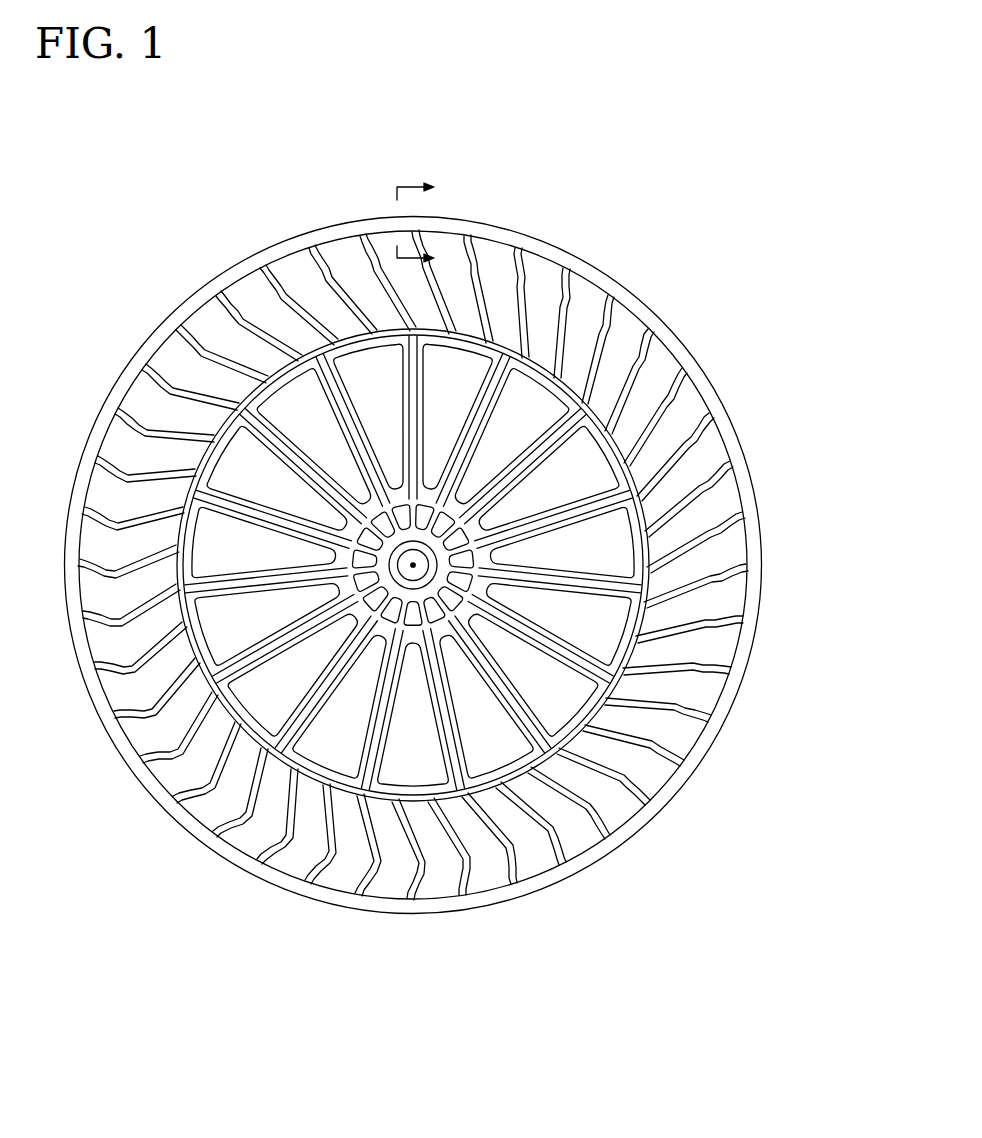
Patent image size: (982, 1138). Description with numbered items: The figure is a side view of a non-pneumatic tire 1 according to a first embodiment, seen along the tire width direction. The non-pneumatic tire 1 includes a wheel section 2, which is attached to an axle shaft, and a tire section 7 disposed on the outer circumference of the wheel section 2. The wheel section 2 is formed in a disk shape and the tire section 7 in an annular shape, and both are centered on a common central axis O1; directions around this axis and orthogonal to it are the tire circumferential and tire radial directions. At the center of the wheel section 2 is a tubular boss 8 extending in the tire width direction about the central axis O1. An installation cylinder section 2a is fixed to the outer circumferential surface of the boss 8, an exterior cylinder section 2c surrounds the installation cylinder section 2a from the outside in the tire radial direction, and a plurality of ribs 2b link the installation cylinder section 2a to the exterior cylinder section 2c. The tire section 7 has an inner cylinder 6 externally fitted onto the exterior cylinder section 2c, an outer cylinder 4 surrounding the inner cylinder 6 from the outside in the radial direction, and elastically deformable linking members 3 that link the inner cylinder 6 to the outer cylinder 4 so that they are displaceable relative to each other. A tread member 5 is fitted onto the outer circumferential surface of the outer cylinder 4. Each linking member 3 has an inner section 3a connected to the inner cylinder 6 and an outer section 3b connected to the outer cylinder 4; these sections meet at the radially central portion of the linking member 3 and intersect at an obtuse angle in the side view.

The non-pneumatic tire 1 is at (190, 192).
The wheel section 2 is at (818, 356).
The installation cylinder section 2a is at (415, 564).
The ribs 2b is at (453, 517).
The exterior cylinder section 2c is at (573, 500).
The linking members 3 is at (818, 549).
The inner section 3a is at (690, 578).
The outer section 3b is at (721, 528).
The outer cylinder 4 is at (739, 643).
The tread member 5 is at (666, 797).
The inner cylinder 6 is at (627, 672).
The tire section 7 is at (858, 574).
The boss 8 is at (409, 541).
The central axis O1 is at (411, 566).